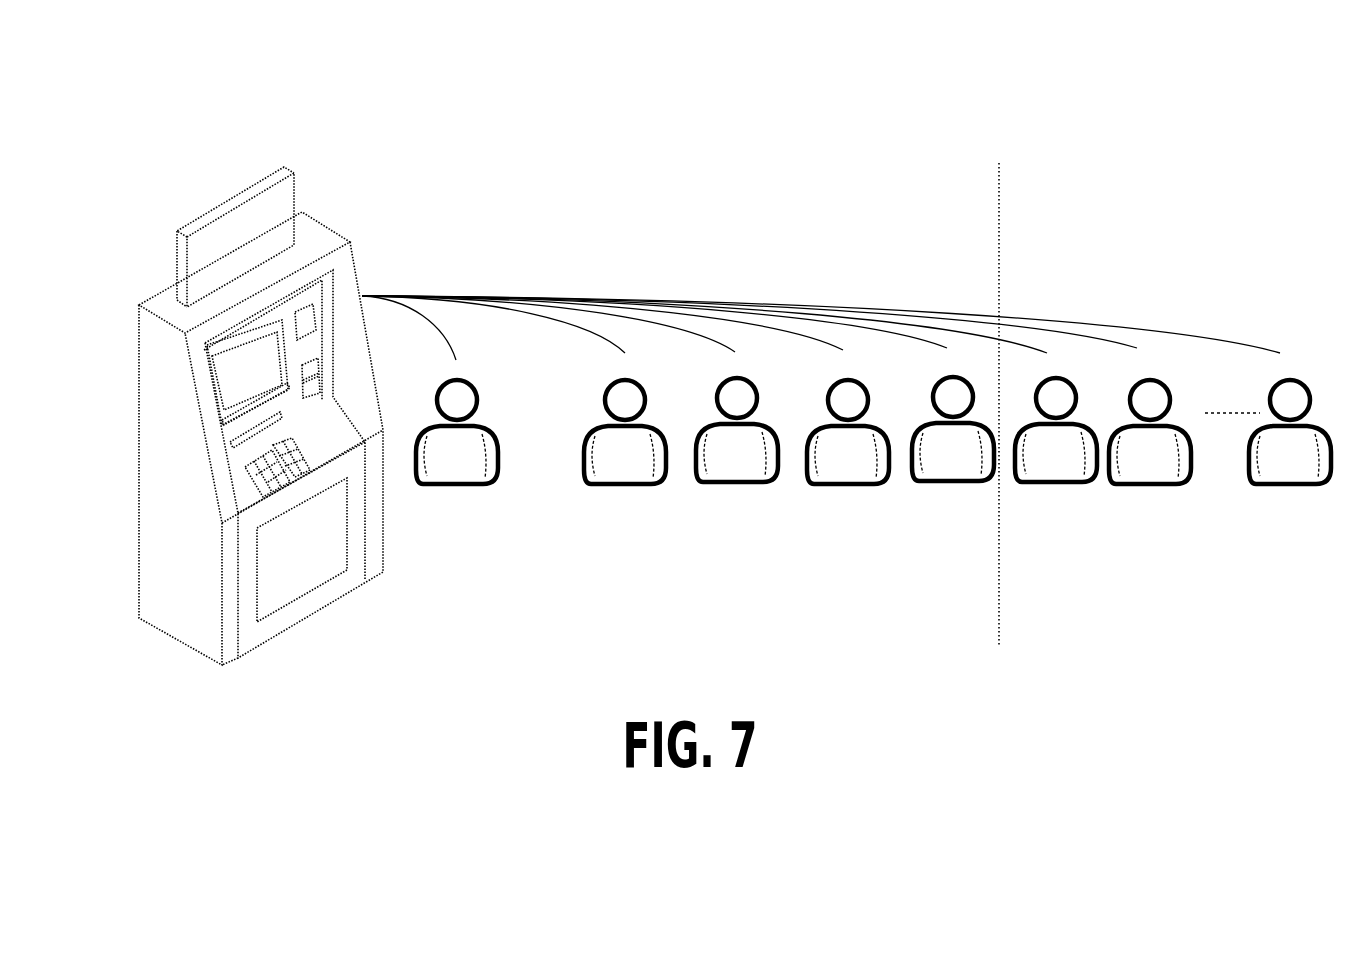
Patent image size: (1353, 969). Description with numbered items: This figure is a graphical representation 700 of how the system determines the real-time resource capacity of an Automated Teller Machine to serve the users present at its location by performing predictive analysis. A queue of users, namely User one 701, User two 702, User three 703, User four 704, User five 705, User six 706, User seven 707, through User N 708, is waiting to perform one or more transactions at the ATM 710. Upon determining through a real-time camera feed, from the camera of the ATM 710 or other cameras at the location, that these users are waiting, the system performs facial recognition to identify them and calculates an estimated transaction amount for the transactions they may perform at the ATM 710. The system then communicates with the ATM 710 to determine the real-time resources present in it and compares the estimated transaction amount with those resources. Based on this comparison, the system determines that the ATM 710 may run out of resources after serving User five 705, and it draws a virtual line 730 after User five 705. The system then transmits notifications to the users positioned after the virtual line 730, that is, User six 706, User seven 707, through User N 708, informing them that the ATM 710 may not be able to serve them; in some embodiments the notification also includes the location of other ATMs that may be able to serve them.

The graphical representation of determining real-time resource capacity of an Automa 700 is at (792, 92).
The User '1' 701 is at (439, 546).
The User '2' 702 is at (608, 548).
The User '3' 703 is at (721, 543).
The User '4' 704 is at (833, 546).
The User '5' 705 is at (937, 543).
The User '6' 706 is at (1040, 543).
The User '7' 707 is at (1133, 546).
The User 'N' 708 is at (1274, 546).
The ATM 710 is at (232, 701).
The virtual line 730 is at (999, 193).